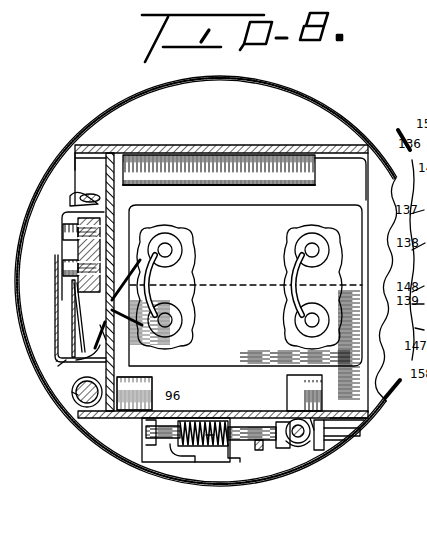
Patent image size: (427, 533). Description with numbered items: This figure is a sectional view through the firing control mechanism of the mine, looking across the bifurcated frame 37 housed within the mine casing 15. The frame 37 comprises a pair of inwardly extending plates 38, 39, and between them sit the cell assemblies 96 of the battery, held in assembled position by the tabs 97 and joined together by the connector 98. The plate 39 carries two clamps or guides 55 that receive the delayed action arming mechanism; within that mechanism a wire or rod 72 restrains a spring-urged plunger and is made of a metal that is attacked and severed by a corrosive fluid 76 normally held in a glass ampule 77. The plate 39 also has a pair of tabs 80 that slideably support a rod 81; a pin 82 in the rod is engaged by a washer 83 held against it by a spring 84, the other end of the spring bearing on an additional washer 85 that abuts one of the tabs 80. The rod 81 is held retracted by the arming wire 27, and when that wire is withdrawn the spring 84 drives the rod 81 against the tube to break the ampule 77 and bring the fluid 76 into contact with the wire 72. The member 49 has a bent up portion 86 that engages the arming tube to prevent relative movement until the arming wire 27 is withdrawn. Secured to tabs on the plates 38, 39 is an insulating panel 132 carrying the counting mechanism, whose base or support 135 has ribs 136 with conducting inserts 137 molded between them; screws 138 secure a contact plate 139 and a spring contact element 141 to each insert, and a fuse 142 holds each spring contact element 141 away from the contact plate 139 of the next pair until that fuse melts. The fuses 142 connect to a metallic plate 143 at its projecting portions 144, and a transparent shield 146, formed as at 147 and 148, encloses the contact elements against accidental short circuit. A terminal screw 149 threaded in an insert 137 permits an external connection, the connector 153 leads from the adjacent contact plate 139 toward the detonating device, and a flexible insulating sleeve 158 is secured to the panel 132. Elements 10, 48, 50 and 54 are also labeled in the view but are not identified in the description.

The washing machine 10 is at (109, 101).
The mine casing 15 is at (260, 80).
The arming wire 27 is at (259, 451).
The bifurcated frame 37 is at (286, 141).
The plate 38 is at (332, 146).
The plate 39 is at (356, 418).
The arm 48 is at (346, 434).
The member 49 is at (326, 441).
The link 50 is at (322, 434).
The lever 54 is at (348, 421).
The clamps or guides 55 is at (299, 440).
The wire or rod 72 is at (326, 435).
The corrosive fluid 76 is at (308, 442).
The glass ampule 77 is at (303, 442).
The tabs 80 is at (178, 446).
The rod 81 is at (150, 433).
The pin 82 is at (240, 427).
The washer 83 is at (236, 452).
The spring 84 is at (214, 420).
The additional washer 85 is at (205, 458).
The bent up portion 86 is at (294, 447).
The cell assemblies 96 is at (234, 174).
The tabs 97 is at (108, 152).
The connector 98 is at (245, 302).
The panel 132 is at (114, 156).
The base or support 135 is at (110, 206).
The ribs 136 is at (70, 197).
The inserts 137 is at (73, 250).
The screws 138 is at (64, 273).
The contact plate 139 is at (72, 351).
The spring contact element 141 is at (73, 306).
The fuse 142 is at (75, 390).
The metallic plate 143 is at (113, 304).
The projecting portions 144 is at (130, 343).
The shield 146 is at (112, 231).
The formed portion of shield 147 is at (58, 366).
The formed portion of shield 148 is at (56, 282).
The terminal screw 149 is at (75, 222).
The connector 153 is at (78, 168).
The flexible sleeve 158 is at (78, 397).